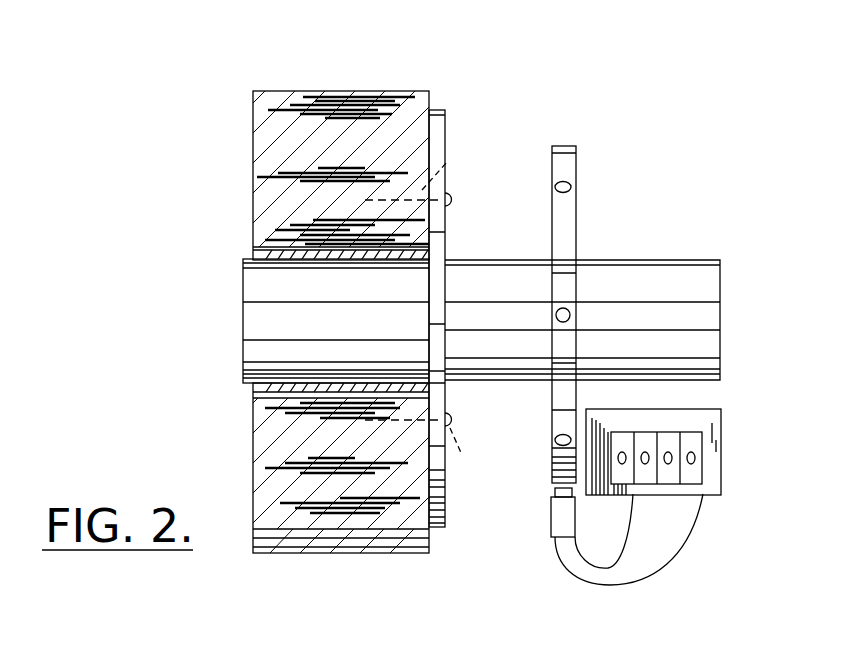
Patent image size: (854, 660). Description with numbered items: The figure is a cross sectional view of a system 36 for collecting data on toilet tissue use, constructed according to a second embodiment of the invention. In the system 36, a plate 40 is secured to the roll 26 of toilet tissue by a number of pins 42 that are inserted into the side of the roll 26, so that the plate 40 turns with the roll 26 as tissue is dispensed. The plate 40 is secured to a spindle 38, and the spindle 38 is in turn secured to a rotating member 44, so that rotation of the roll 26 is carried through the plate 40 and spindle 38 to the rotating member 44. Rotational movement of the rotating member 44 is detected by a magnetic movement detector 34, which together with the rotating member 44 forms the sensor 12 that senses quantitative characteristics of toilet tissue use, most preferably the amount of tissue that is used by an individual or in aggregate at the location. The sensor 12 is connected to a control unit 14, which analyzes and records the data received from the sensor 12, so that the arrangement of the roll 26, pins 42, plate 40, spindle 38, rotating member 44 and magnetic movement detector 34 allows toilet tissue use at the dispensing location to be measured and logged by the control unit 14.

The sensor 12 is at (543, 487).
The control unit 14 is at (718, 425).
The roll 26 is at (329, 90).
The magnetic movement detector 34 is at (553, 522).
The system 36 is at (542, 78).
The spindle 38 is at (652, 270).
The plate 40 is at (443, 130).
The pins 42 is at (453, 153).
The rotating member 44 is at (578, 204).